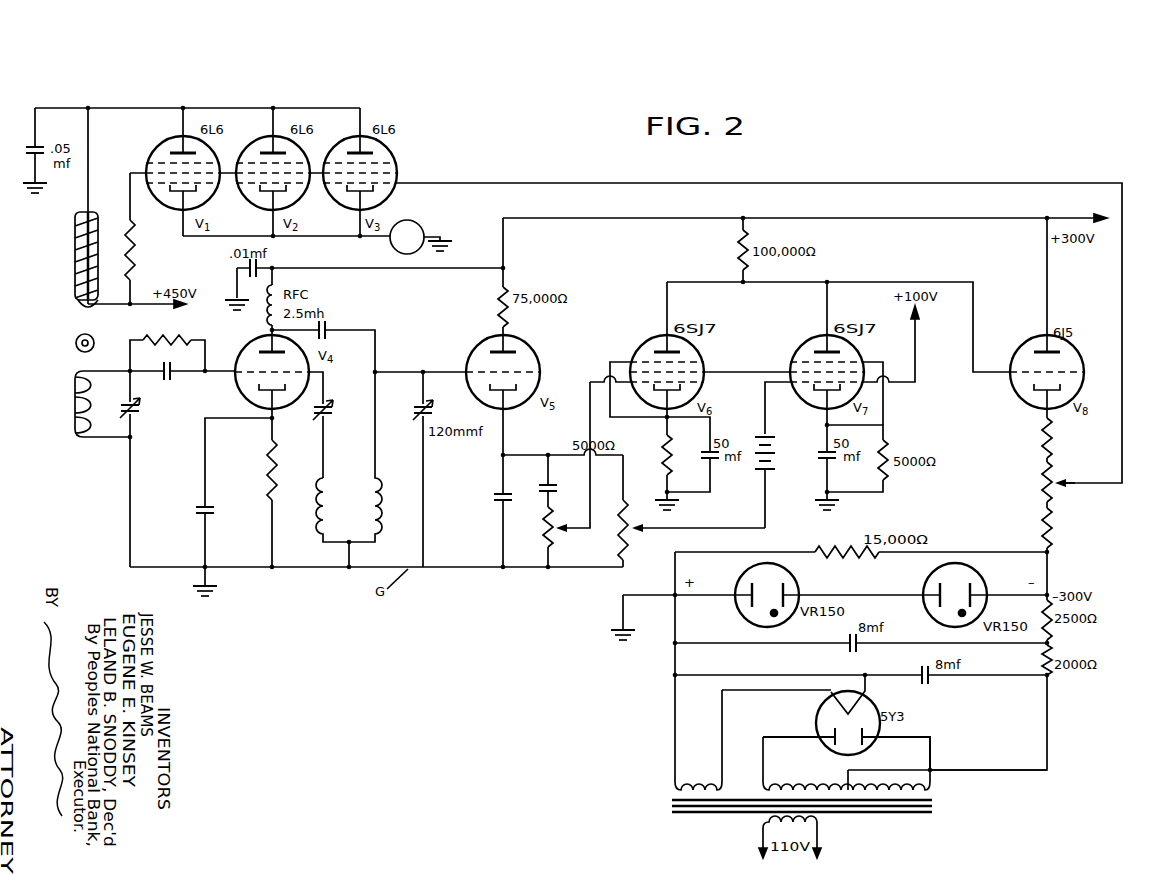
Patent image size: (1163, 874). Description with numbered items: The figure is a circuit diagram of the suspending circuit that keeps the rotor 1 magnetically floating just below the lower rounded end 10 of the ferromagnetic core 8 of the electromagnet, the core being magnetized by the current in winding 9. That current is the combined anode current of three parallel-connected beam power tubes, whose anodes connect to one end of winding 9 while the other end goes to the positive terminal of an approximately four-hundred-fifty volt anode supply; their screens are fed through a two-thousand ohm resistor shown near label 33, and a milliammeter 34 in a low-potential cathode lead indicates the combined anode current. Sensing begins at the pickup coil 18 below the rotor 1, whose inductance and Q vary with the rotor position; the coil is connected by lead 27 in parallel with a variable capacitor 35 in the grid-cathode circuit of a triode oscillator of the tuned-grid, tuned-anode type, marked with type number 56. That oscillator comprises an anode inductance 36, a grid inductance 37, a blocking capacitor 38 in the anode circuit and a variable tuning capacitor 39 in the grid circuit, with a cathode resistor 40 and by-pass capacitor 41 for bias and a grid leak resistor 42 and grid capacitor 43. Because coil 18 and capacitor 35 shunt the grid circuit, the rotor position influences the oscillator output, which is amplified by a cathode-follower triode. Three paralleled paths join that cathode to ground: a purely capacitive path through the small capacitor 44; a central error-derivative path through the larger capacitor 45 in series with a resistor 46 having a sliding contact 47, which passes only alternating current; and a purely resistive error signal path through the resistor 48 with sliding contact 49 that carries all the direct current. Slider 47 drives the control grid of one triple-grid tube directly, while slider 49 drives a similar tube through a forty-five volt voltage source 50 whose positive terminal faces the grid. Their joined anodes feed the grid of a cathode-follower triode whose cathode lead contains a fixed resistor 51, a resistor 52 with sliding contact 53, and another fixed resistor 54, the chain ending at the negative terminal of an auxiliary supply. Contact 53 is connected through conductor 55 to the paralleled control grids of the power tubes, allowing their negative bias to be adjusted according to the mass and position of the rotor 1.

The rotor 1 is at (74, 350).
The ferromagnetic core 8 is at (92, 218).
The winding 9 is at (69, 258).
The lower rounded end 10 is at (80, 309).
The pickup coil 18 is at (71, 402).
The lead 27 is at (125, 461).
The resistor 33 is at (146, 268).
The milliammeter 34 is at (417, 226).
The variable capacitor 35 is at (140, 414).
The anode inductance 36 is at (377, 490).
The grid inductance 37 is at (327, 491).
The blocking capacitor 38 is at (333, 324).
The variable tuning capacitor 39 is at (333, 418).
The cathode resistor 40 is at (290, 489).
The by-pass capacitor 41 is at (214, 512).
The grid leak resistor 42 is at (189, 343).
The grid capacitor 43 is at (168, 378).
The small capacitor 44 is at (492, 497).
The capacitor 45 is at (538, 489).
The resistor 46 is at (555, 521).
The sliding contact 47 is at (573, 457).
The resistor 48 is at (627, 530).
The sliding contact 49 is at (633, 522).
The voltage source 50 is at (777, 448).
The fixed resistor 51 is at (1053, 536).
The resistor 52 is at (1042, 492).
The sliding contact 53 is at (1058, 481).
The fixed resistor 54 is at (1043, 436).
The conductor 55 is at (494, 183).
The ground connection 56 is at (378, 306).